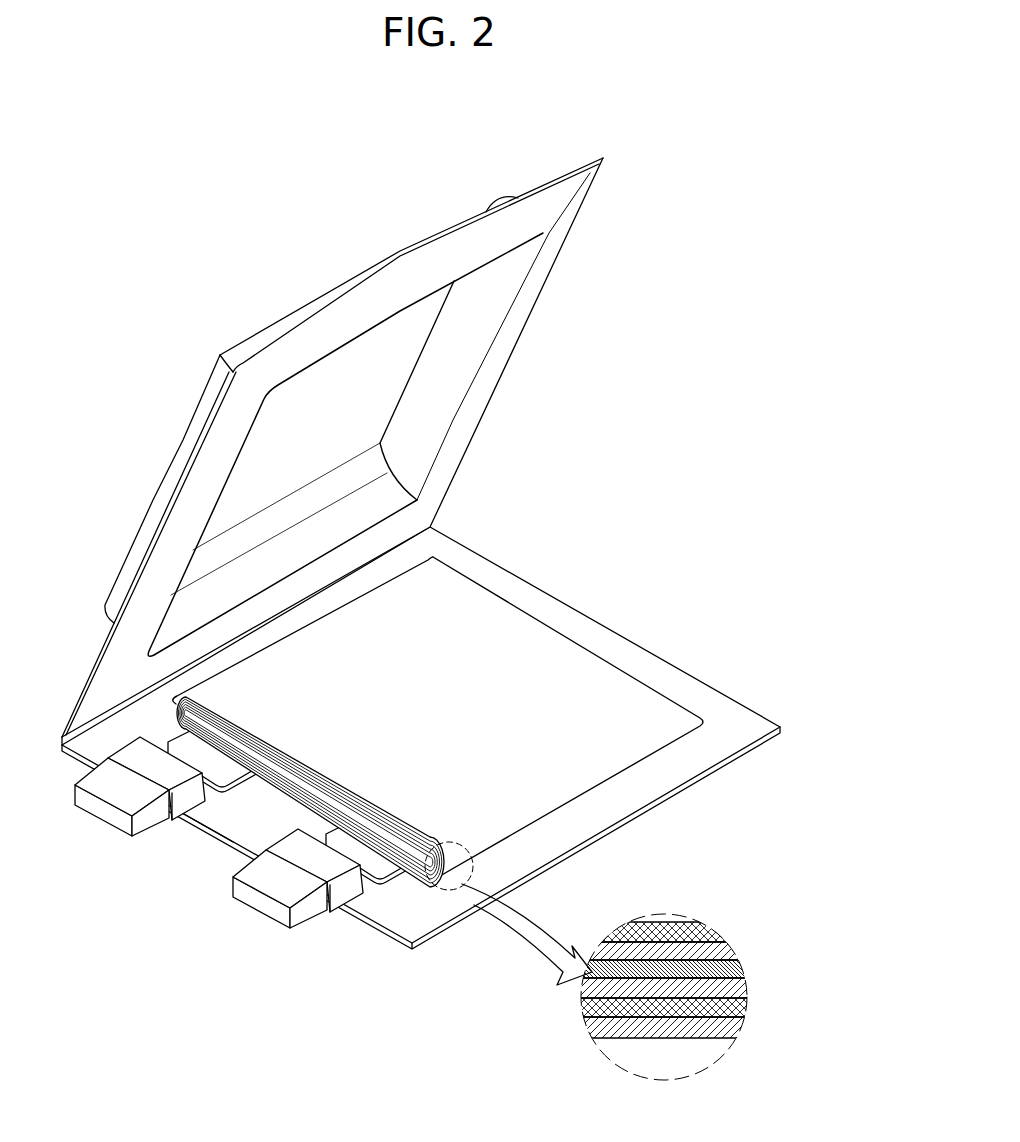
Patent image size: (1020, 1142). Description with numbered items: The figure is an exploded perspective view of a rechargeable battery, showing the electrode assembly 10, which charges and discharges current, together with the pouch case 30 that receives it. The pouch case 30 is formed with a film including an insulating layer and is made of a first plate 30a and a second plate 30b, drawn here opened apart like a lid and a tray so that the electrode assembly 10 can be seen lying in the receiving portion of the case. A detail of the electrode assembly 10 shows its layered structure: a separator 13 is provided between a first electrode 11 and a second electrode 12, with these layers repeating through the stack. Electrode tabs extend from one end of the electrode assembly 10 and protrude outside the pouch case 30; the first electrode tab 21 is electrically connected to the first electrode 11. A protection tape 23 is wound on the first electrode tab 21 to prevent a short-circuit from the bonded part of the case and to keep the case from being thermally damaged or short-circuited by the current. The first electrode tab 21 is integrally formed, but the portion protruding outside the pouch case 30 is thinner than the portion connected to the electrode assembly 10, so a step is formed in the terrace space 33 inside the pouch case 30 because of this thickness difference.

The electrode assembly 10 is at (537, 651).
The first electrode 11 is at (730, 968).
The second electrode 12 is at (692, 930).
The separator 13 is at (715, 950).
The first electrode tab 21 is at (307, 903).
The protection tape 23 is at (343, 895).
The pouch case 30 is at (441, 553).
The first plate 30a is at (557, 208).
The second plate 30b is at (730, 735).
The terrace space 33 is at (253, 822).